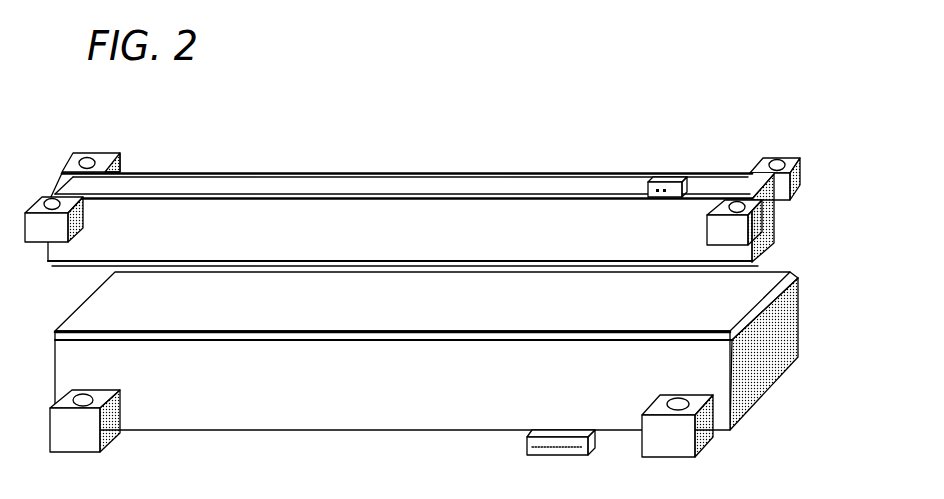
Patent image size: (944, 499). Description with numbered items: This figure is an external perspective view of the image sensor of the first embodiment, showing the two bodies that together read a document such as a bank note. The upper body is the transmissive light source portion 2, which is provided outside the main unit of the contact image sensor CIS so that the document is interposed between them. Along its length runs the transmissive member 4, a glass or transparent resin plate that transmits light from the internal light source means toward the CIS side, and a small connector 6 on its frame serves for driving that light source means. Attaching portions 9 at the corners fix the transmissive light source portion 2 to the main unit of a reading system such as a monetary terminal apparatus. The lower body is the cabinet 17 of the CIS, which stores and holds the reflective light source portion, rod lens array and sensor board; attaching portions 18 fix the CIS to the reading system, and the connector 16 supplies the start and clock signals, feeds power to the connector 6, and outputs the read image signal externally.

The transmissive light source portion 2 is at (320, 172).
The transmissive member 4 is at (510, 263).
The connector 6 is at (692, 175).
The attaching portion 9 is at (105, 170).
The connector 16 is at (560, 455).
The cabinet of CIS 17 is at (380, 431).
The attaching portion of CIS 18 is at (118, 430).
The contact image sensor CIS is at (677, 444).